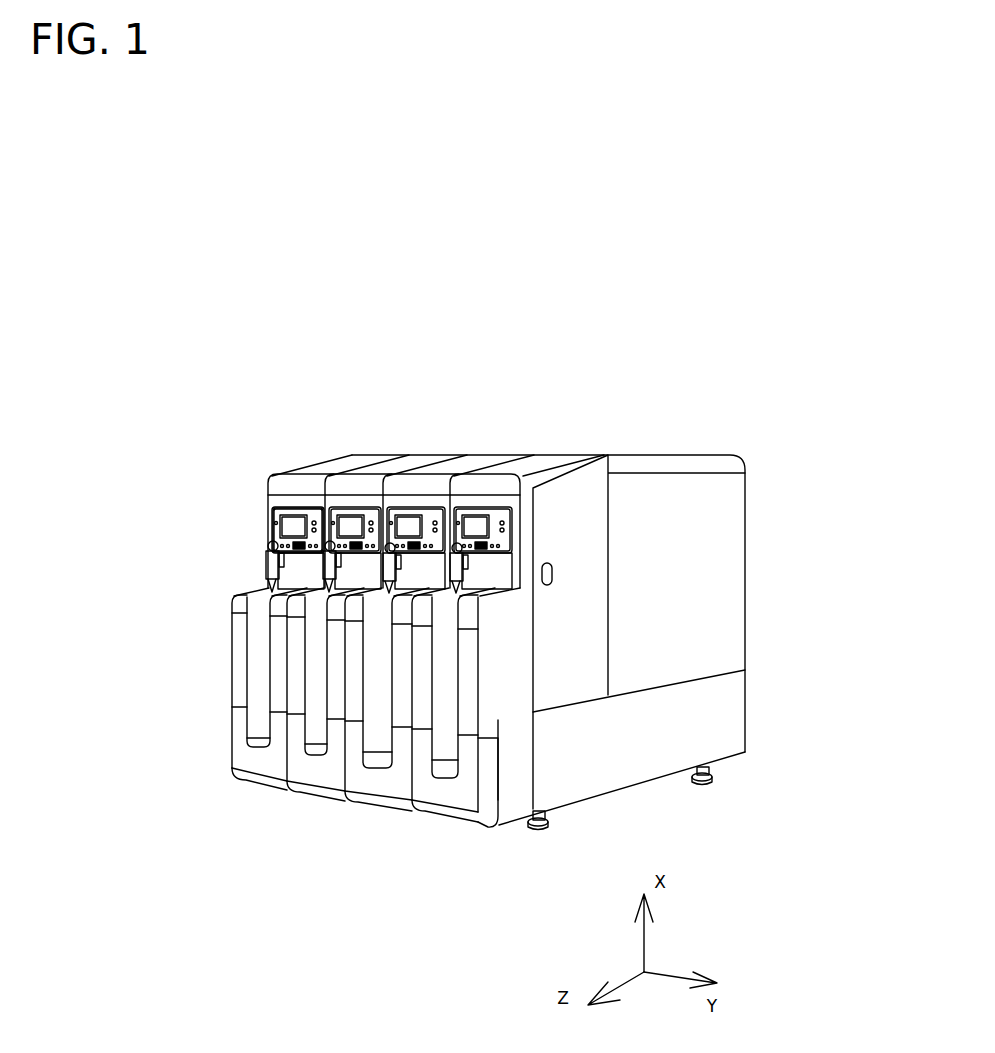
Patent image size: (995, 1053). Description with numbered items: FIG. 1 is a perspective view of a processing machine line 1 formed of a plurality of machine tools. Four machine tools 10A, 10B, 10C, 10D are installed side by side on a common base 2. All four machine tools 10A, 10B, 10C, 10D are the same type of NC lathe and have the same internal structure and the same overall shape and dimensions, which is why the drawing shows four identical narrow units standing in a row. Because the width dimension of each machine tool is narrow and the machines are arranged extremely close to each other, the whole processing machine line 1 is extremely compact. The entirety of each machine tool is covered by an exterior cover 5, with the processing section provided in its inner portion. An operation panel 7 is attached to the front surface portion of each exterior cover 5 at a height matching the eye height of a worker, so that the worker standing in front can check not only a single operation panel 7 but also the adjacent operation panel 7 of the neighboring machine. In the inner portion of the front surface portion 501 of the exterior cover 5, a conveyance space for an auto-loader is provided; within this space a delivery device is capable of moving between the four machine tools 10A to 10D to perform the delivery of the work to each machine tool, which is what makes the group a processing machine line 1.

The processing machine line 1 is at (478, 323).
The base 2 is at (647, 765).
The exterior cover 5 is at (705, 630).
The operation panel 7 is at (283, 508).
The machine tool 10A is at (350, 452).
The machine tool 10B is at (422, 452).
The machine tool 10C is at (492, 452).
The machine tool 10D is at (565, 452).
The front surface portion 501 is at (527, 714).